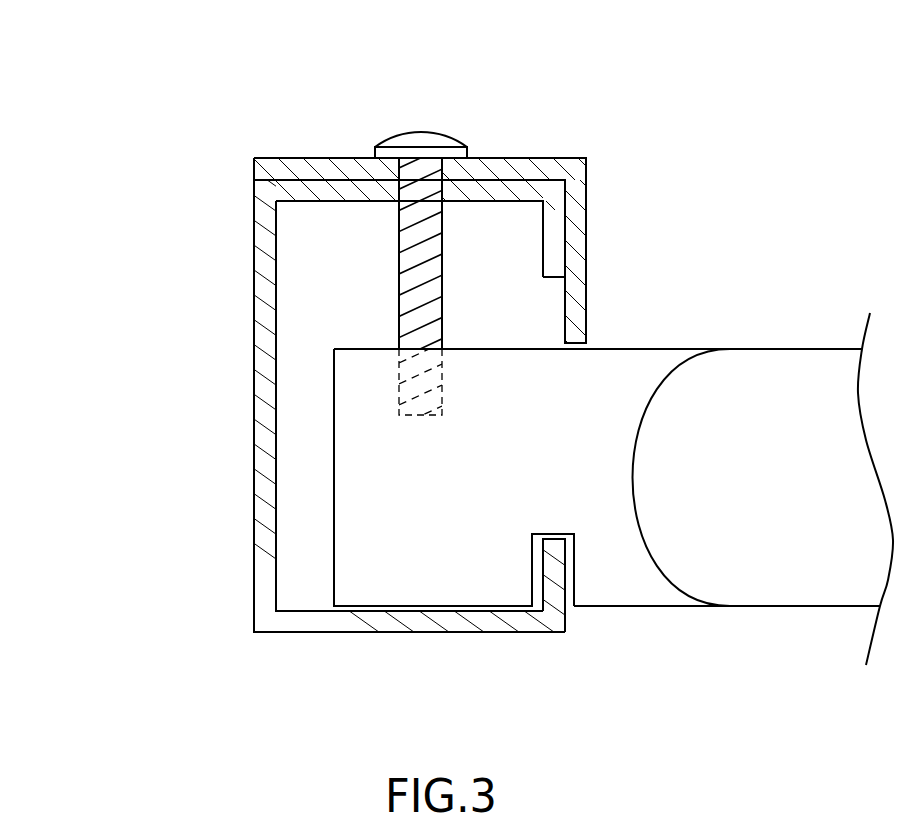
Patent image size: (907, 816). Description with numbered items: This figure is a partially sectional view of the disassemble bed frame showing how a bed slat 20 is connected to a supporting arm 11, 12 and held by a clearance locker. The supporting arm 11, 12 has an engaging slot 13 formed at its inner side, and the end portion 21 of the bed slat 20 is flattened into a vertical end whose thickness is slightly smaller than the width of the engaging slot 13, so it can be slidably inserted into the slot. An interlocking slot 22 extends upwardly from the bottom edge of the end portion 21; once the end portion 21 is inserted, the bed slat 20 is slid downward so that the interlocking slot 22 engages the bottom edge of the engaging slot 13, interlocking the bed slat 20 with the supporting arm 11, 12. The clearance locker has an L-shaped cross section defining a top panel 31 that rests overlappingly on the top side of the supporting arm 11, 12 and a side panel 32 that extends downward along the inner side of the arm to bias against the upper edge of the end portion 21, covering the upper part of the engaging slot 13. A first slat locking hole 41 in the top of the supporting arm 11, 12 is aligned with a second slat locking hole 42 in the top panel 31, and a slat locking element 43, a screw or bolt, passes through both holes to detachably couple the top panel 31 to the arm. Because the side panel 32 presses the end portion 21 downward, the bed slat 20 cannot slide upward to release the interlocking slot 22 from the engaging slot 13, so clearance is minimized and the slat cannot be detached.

The supporting arm 11 is at (453, 398).
The supporting arm 12 is at (265, 387).
The engaging slot 13 is at (559, 303).
The bed slat 20 is at (780, 548).
The end portion 21 is at (390, 580).
The interlocking slot 22 is at (580, 568).
The top panel 31 is at (475, 208).
The side panel 32 is at (578, 315).
The first slat locking hole 41 is at (388, 190).
The second slat locking hole 42 is at (388, 168).
The slat locking element 43 is at (428, 257).